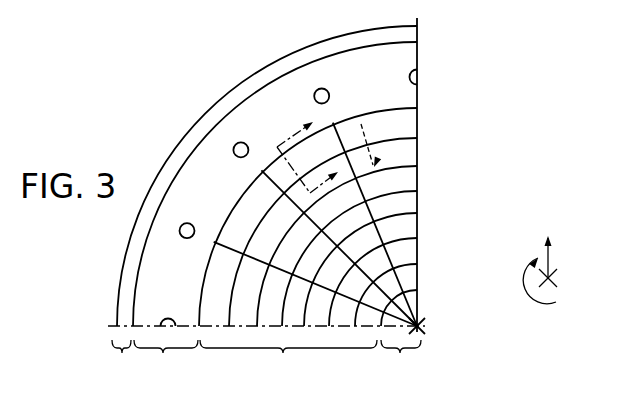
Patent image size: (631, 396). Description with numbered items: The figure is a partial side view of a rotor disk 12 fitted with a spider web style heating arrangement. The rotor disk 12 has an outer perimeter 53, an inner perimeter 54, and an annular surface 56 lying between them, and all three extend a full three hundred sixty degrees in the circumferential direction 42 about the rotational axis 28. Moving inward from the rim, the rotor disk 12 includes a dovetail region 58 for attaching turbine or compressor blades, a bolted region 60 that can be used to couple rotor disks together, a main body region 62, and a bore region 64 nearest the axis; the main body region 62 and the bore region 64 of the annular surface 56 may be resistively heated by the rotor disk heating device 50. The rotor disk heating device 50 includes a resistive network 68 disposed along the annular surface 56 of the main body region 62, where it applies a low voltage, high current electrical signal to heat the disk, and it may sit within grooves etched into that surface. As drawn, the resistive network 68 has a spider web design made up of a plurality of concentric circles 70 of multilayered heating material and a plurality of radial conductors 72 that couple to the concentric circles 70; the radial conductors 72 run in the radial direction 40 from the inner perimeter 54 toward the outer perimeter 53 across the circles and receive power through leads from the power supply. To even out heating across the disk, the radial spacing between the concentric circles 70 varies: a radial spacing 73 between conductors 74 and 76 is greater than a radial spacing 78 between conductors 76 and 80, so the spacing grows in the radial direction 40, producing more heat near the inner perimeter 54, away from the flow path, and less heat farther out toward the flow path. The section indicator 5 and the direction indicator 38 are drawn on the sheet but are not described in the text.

The rotor disk 12 is at (112, 115).
The outer perimeter 53 is at (202, 114).
The annular surface 56 is at (408, 126).
The rotational axis 28 is at (422, 322).
The radial conductors 72 is at (272, 190).
The radial spacing 73 is at (362, 122).
The radial spacing 78 is at (376, 165).
The concentric circles 70 is at (406, 68).
The section line 5- 5 is at (311, 147).
The conductor 74 is at (407, 127).
The conductor 76 is at (406, 144).
The resistive network 68 is at (388, 162).
The conductor 80 is at (388, 168).
The rotor disk heating device 50 is at (437, 222).
The inner perimeter 54 is at (410, 297).
The axial direction 38 is at (556, 278).
The radial direction 40 is at (552, 260).
The circumferential direction 42 is at (526, 279).
The dovetail region 58 is at (122, 353).
The bolted region 60 is at (163, 353).
The main body region 62 is at (283, 353).
The bore region 64 is at (400, 353).